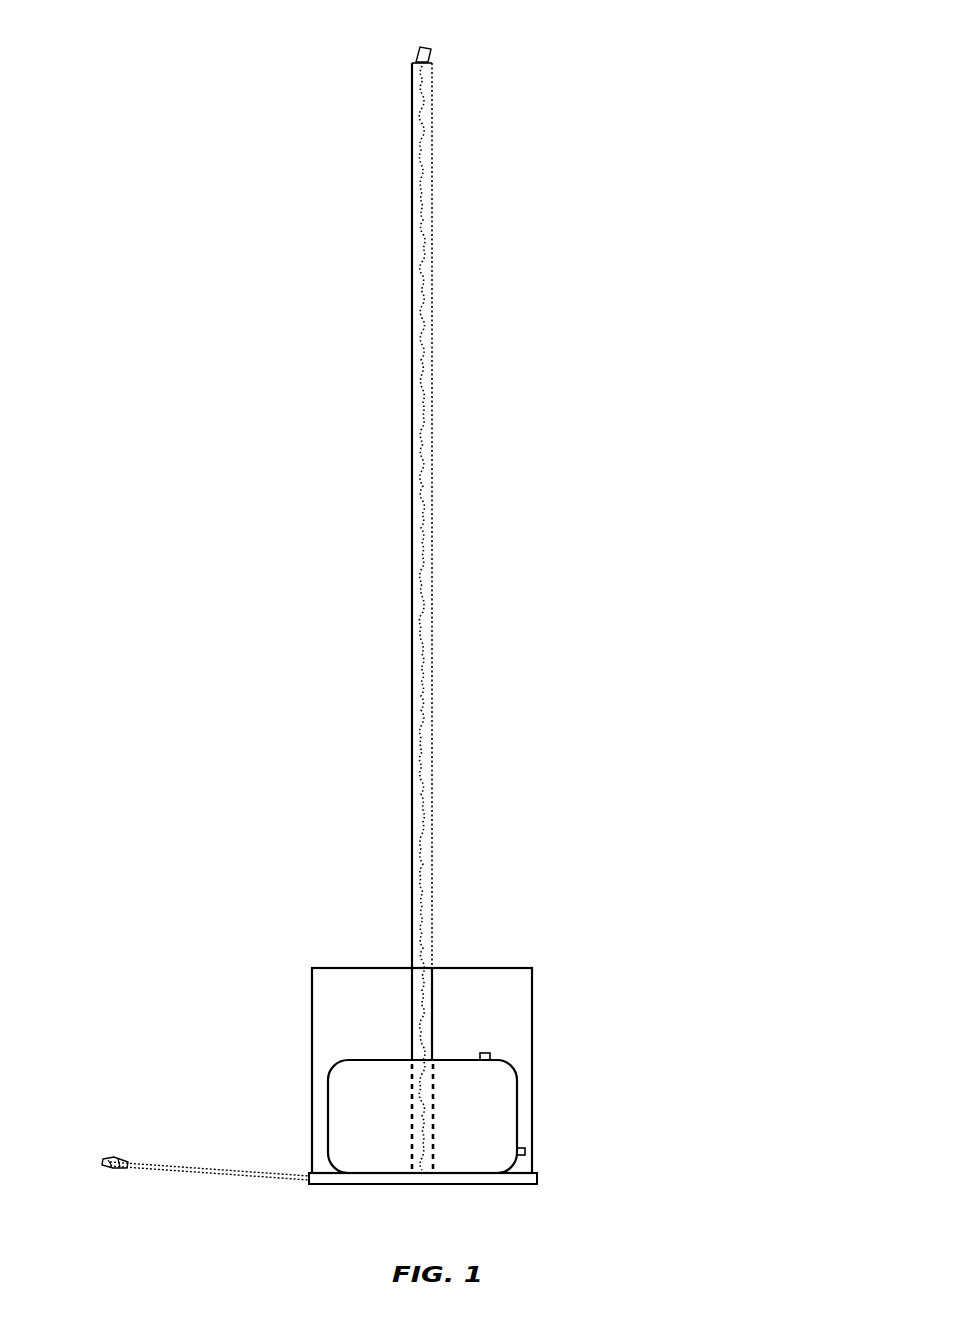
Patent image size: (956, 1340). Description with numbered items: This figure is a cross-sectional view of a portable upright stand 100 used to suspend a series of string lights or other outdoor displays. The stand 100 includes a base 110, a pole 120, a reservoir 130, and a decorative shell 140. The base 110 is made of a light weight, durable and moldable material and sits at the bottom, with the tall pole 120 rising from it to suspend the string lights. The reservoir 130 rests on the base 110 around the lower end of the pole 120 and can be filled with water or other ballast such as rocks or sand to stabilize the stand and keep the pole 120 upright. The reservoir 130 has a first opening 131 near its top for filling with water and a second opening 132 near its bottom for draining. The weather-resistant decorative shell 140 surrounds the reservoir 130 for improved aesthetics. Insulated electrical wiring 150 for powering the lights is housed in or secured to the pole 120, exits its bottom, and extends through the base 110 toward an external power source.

The upright stand 100 is at (708, 73).
The base 110 is at (515, 1187).
The pole 120 is at (433, 580).
The reservoir 130 is at (510, 1057).
The first opening 131 is at (493, 1053).
The second opening 132 is at (519, 1147).
The decorative shell 140 is at (515, 967).
The electrical wiring 150 is at (205, 1168).